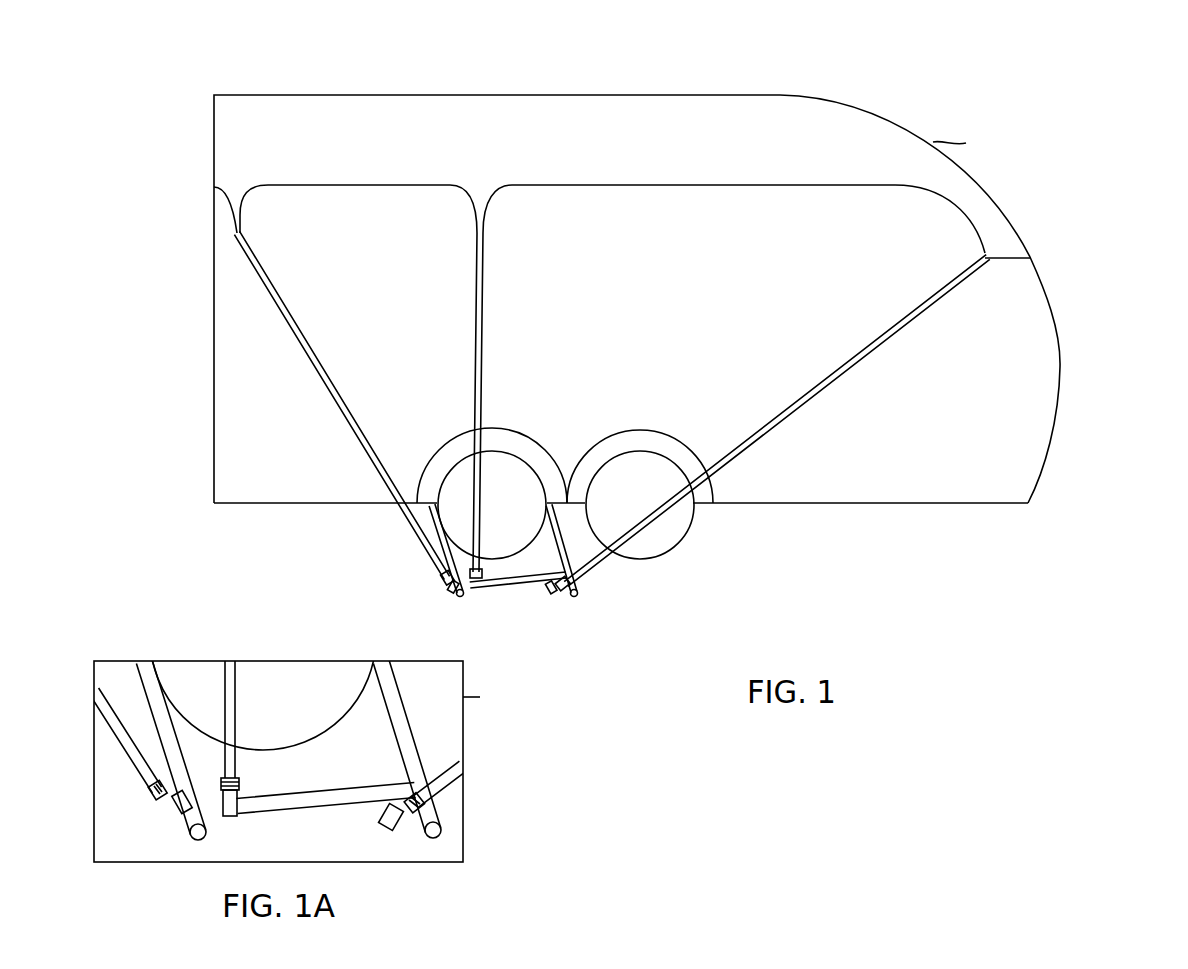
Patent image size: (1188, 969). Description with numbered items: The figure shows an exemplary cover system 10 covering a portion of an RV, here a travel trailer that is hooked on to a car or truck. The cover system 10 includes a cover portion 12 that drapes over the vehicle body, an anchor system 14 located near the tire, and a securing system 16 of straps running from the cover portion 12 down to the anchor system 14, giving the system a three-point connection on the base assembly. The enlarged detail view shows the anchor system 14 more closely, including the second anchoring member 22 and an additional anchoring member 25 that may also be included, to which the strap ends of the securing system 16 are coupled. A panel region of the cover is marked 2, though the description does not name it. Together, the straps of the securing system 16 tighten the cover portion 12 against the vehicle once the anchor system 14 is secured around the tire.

In FIG. 1, the cover system 10 is at (172, 136).
In FIG. 1, the cover portion 12 is at (597, 154).
In FIG. 1, the panel / window section 2 is at (592, 354).
In FIG. 1, the anchor system 14 is at (510, 587).
In FIG. 1, the securing system 16 is at (783, 518).
In FIG. 1A, the second anchoring member 22 is at (400, 693).
In FIG. 1A, the additional anchoring member 25 is at (157, 733).